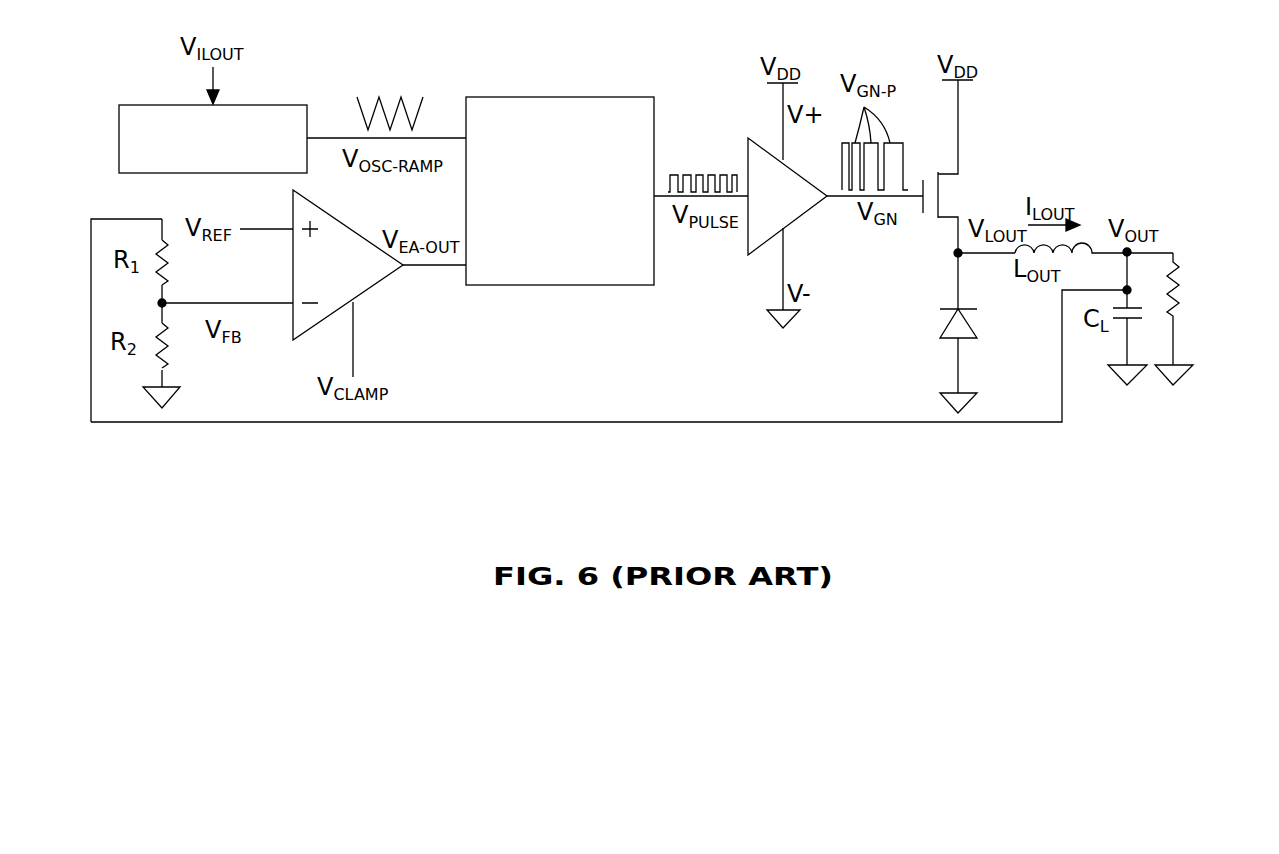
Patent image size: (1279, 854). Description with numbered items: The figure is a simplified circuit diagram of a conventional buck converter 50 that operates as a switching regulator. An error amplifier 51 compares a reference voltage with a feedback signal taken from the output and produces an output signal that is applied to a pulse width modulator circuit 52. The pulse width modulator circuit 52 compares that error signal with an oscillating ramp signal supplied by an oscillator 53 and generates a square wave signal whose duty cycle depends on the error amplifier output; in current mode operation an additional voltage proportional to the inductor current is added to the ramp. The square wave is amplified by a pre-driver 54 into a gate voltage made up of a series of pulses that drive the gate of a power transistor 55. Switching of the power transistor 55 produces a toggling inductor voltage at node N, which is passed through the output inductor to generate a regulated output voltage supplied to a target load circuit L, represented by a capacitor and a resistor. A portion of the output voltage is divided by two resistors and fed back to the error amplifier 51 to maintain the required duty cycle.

The buck converter 50 is at (1002, 82).
The error amplifier 51 is at (348, 283).
The pulse width modulator (PWM) circuit 52 is at (560, 191).
The oscillator 53 is at (213, 139).
The pre-driver (amplifier) 54 is at (787, 205).
The power transistor 55 is at (923, 212).
The node N is at (962, 255).
The target load circuit L is at (1197, 320).